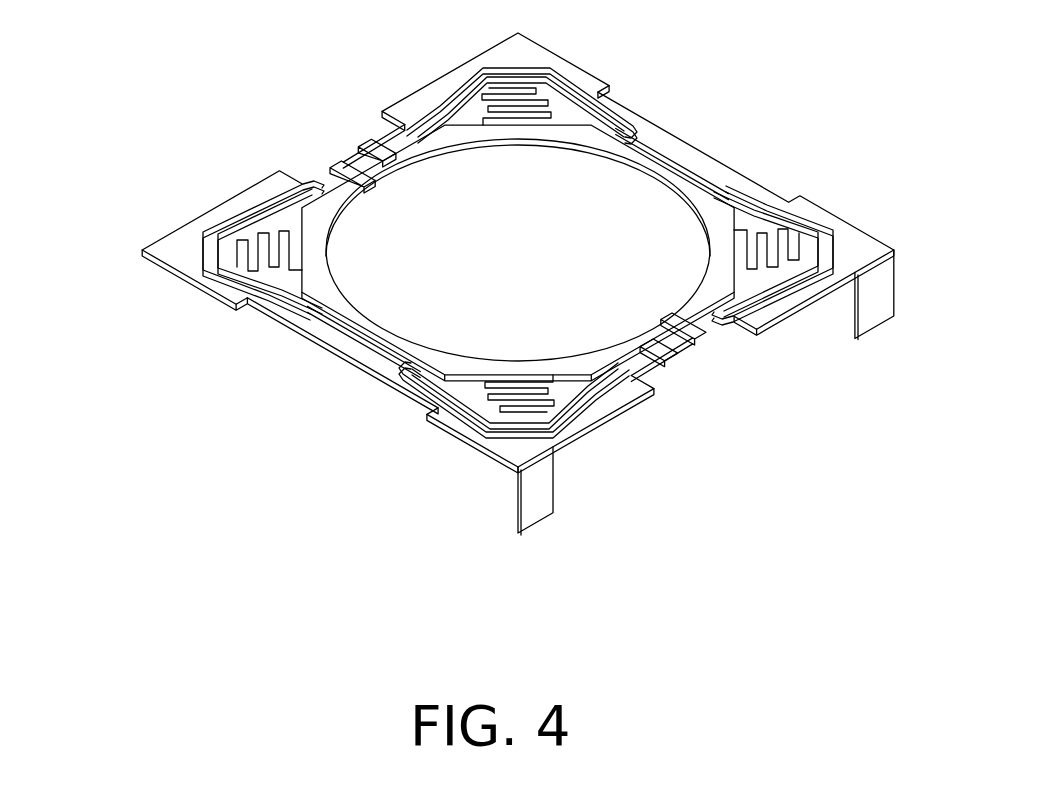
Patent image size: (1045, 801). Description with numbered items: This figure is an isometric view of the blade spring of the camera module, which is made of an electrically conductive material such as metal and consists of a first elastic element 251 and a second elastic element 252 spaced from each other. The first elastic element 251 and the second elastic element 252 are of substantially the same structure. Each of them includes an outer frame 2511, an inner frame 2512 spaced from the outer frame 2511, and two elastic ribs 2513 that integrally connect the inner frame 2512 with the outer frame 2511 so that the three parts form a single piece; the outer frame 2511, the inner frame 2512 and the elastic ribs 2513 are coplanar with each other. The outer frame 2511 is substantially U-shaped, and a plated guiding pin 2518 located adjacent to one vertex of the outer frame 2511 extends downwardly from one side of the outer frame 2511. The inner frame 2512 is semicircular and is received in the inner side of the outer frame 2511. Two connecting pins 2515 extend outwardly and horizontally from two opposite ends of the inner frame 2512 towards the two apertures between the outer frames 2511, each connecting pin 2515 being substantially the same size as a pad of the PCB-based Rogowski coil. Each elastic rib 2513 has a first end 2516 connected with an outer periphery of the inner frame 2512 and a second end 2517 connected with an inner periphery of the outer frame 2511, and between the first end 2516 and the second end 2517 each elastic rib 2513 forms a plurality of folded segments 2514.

The first elastic element 251 is at (188, 92).
The outer frame 2511 is at (178, 250).
The inner frame 2512 is at (330, 193).
The elastic rib 2513 is at (240, 233).
The folded segment 2514 is at (540, 405).
The connecting pin 2515 is at (343, 167).
The first end 2516 is at (566, 395).
The second end 2517 is at (580, 390).
The guiding pin 2518 is at (870, 312).
The second elastic element 252 is at (661, 166).